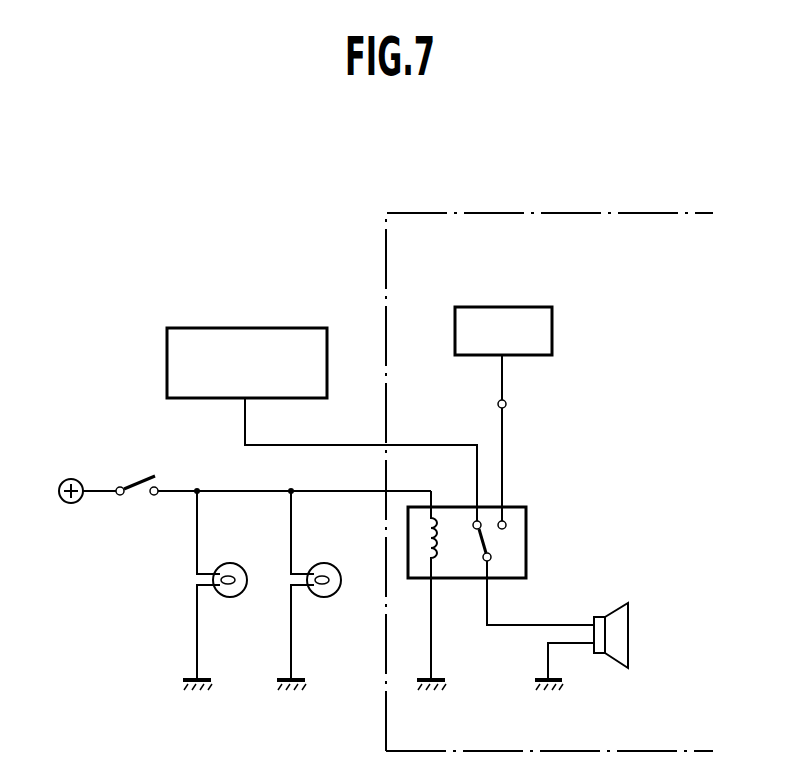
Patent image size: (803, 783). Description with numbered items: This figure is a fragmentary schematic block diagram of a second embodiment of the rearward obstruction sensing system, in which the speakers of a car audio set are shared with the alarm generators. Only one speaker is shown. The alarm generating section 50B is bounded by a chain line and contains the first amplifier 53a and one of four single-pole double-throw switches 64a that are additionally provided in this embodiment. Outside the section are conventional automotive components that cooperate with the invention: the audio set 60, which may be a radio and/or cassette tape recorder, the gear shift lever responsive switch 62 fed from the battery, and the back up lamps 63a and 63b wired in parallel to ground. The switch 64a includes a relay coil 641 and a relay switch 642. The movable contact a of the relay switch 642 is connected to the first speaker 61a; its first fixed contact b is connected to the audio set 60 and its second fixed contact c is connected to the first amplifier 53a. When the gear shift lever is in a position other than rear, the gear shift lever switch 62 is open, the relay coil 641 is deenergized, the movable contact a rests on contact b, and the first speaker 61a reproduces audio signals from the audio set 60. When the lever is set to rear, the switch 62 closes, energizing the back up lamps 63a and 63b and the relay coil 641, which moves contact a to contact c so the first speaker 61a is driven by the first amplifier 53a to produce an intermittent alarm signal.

The alarm generating section 50B is at (385, 268).
The audio set 60 is at (305, 328).
The first amplifier 53a is at (533, 307).
The single-pole double-throw switch 64a is at (574, 585).
The relay coil 641 is at (440, 548).
The relay switch 642 is at (496, 540).
The first speaker 61a is at (613, 665).
The gear shift lever responsive switch 62 is at (137, 497).
The back up lamp 63a is at (240, 597).
The back up lamp 63b is at (333, 597).